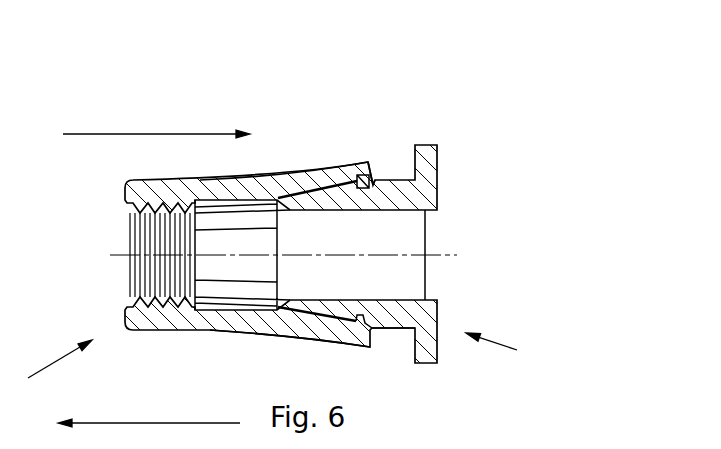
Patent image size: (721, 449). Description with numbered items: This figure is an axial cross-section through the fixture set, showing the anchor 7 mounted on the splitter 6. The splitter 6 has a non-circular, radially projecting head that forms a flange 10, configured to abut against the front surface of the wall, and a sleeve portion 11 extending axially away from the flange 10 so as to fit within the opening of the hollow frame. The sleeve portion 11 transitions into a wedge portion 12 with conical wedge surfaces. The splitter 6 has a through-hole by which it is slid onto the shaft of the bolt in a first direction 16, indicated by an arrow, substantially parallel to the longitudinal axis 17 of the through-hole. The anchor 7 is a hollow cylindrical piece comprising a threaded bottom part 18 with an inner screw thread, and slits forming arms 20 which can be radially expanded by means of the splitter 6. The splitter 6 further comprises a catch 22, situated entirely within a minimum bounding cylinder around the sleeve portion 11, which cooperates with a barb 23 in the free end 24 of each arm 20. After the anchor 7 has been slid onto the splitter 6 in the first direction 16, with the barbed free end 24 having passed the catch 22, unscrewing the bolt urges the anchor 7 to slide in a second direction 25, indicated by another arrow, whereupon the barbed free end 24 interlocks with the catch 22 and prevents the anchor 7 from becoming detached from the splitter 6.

The splitter 6 is at (500, 351).
The anchor 7 is at (50, 367).
The flange 10 is at (0, 255).
The sleeve portion 11 is at (388, 315).
The wedge portion 12 is at (327, 308).
The first direction 16 is at (155, 135).
The longitudinal axis 17 is at (448, 255).
The threaded bottom part 18 is at (149, 197).
The arms 20 is at (291, 192).
The catch 22 is at (379, 188).
The barb 23 is at (358, 178).
The free end 24 is at (374, 164).
The second direction 25 is at (155, 423).